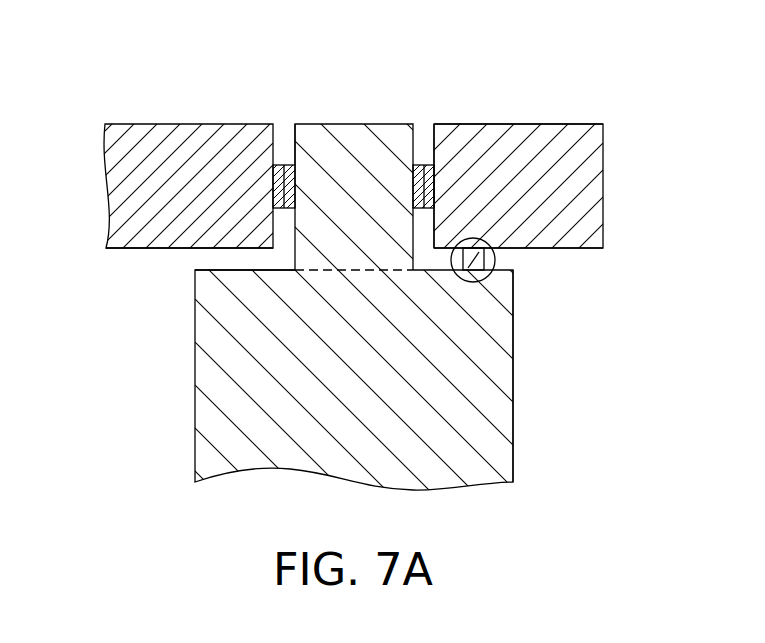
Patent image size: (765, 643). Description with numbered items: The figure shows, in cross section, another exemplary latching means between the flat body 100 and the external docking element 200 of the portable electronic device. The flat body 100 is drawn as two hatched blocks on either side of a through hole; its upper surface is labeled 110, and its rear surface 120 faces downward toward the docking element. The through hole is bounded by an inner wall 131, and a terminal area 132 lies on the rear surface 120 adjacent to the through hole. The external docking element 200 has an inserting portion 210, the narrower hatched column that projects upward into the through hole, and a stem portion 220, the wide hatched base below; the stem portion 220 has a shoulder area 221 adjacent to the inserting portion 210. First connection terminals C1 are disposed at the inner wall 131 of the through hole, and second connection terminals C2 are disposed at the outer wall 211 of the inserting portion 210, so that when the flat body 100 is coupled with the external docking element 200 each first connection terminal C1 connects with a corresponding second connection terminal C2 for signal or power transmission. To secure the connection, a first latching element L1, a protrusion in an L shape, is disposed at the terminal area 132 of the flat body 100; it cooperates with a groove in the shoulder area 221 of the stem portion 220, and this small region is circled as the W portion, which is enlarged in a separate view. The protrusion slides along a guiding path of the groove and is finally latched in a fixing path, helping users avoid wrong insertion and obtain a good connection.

The flat body 100 is at (583, 158).
The first surface of substrate 110 is at (574, 122).
The rear surface 120 is at (583, 252).
The inner wall 131 is at (432, 125).
The terminal area 132 is at (228, 253).
The external docking element 200 is at (490, 363).
The inserting portion 210 is at (365, 140).
The outer wall 211 is at (293, 125).
The stem portion 220 is at (513, 428).
The shoulder area 221 is at (265, 268).
The first connection terminals C1 is at (273, 182).
The second connection terminals C2 is at (295, 177).
The first latching element L1 is at (478, 246).
The W portion W is at (495, 262).